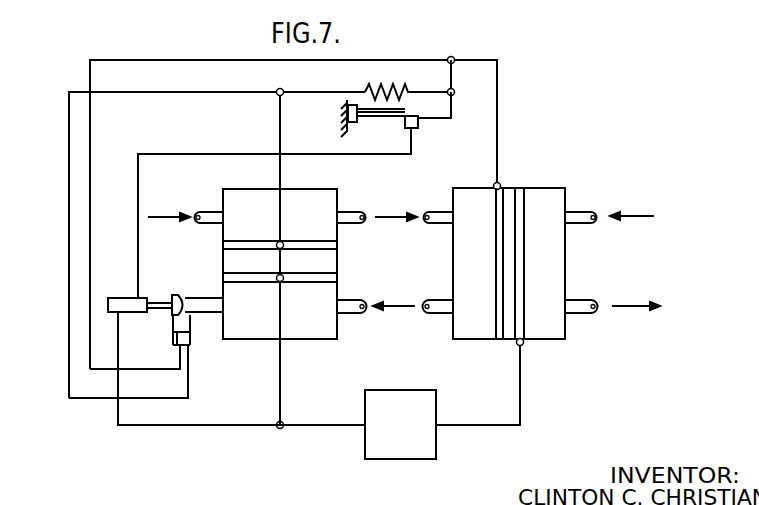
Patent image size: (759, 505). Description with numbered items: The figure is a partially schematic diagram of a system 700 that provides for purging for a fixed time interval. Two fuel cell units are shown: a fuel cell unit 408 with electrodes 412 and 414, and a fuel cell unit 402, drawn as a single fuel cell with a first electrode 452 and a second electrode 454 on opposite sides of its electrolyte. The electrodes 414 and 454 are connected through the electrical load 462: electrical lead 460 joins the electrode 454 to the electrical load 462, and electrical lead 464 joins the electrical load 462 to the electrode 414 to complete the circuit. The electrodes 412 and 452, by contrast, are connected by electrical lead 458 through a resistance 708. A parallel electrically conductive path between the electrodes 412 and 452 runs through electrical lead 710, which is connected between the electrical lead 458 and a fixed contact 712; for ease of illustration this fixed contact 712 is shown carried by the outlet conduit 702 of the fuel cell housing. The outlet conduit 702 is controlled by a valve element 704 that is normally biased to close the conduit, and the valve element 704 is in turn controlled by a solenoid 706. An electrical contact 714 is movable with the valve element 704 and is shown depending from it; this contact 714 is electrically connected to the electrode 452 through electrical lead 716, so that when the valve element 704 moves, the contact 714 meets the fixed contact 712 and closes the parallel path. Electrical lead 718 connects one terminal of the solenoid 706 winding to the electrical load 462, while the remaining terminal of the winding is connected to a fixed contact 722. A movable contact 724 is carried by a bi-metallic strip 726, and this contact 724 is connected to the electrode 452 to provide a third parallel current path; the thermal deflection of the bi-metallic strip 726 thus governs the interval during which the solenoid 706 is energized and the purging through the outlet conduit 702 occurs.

The system 700 is at (531, 133).
The fuel cell unit 402 is at (578, 168).
The fuel cell unit 408 is at (243, 187).
The electrode 412 is at (303, 242).
The electrode 414 is at (303, 284).
The first electrode 452 is at (494, 278).
The second electrode 454 is at (524, 250).
The electrical lead 458 is at (280, 128).
The electrical lead 460 is at (521, 380).
The electrical load 462 is at (395, 461).
The electrical lead 464 is at (280, 380).
The outlet conduit 702 is at (205, 302).
The valve element 704 is at (173, 294).
The solenoid 706 is at (120, 298).
The resistance 708 is at (396, 94).
The electrical lead 710 is at (69, 200).
The fixed contact 712 is at (190, 347).
The electrical contact 714 is at (175, 340).
The electrical lead 716 is at (90, 118).
The electrical lead 718 is at (207, 427).
The fixed contact 722 is at (413, 131).
The movable contact 724 is at (420, 122).
The bi-metallic strip 726 is at (375, 121).